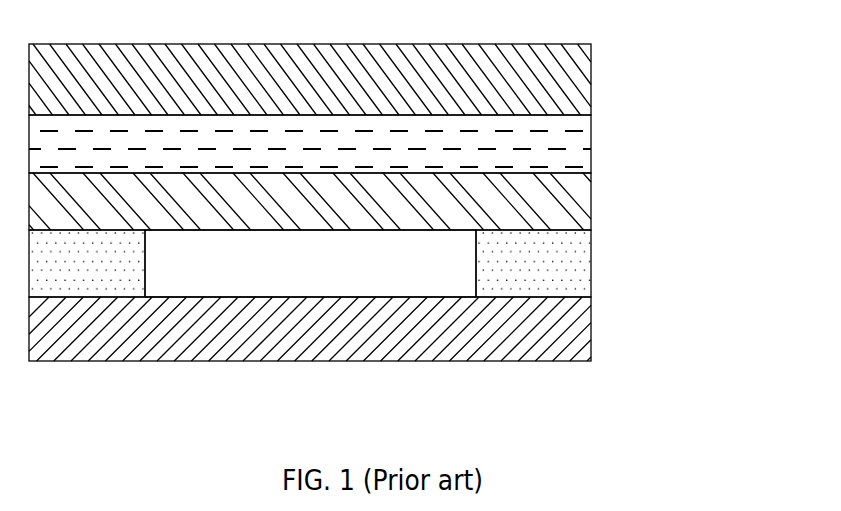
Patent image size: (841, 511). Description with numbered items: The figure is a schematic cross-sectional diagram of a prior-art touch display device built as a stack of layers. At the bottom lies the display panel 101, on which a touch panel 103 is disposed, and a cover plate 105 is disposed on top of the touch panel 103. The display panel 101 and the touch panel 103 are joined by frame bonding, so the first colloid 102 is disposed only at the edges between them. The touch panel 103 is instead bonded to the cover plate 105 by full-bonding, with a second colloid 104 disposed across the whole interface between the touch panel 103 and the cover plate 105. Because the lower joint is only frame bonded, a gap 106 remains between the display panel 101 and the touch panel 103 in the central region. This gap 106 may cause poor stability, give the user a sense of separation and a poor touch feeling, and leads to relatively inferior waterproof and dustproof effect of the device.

The display panel 101 is at (563, 338).
The first colloid 102 is at (563, 270).
The touch panel 103 is at (565, 200).
The second colloid 104 is at (565, 140).
The cover plate 105 is at (565, 82).
The gap 106 is at (315, 263).